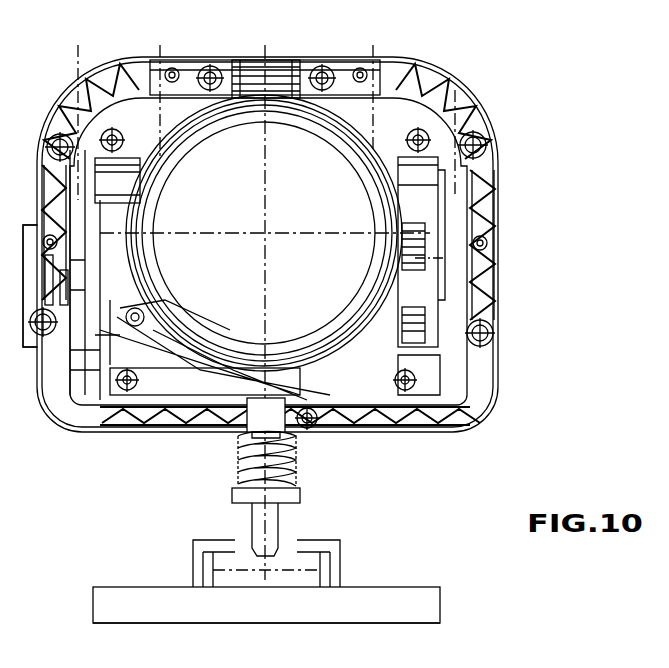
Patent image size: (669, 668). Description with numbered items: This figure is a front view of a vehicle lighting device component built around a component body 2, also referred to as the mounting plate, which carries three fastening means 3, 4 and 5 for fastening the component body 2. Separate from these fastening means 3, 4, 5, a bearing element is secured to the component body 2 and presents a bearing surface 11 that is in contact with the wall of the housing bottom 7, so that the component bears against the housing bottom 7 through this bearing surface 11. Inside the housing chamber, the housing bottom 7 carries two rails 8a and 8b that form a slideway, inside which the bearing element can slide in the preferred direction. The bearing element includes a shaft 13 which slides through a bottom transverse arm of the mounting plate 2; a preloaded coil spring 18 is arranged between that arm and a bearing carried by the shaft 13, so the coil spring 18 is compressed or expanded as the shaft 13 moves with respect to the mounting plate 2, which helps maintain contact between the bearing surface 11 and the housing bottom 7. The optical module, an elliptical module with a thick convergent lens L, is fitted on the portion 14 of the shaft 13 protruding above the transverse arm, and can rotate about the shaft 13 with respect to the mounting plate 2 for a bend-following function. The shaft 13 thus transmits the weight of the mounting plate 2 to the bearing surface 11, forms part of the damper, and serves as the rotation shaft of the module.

The thick convergent lens L is at (283, 140).
The component body 2 is at (260, 238).
The fastening means 3 is at (55, 140).
The fastening means 4 is at (487, 145).
The fastening means 5 is at (493, 333).
The housing bottom 7 is at (98, 595).
The rail 8a is at (197, 572).
The rail 8b is at (335, 561).
The bearing surface 11 is at (241, 592).
The shaft 13 is at (273, 514).
The portion of the shaft 14 is at (264, 413).
The coil spring 18 is at (290, 457).